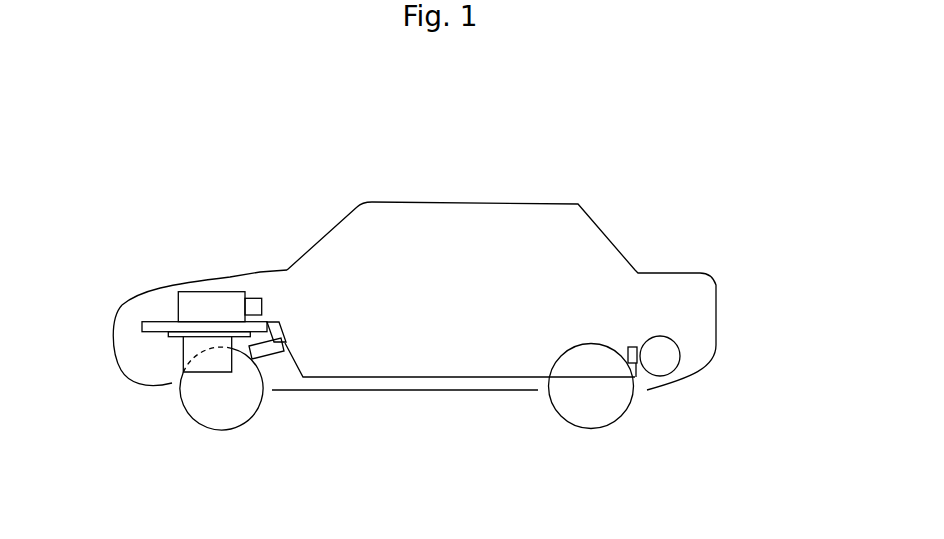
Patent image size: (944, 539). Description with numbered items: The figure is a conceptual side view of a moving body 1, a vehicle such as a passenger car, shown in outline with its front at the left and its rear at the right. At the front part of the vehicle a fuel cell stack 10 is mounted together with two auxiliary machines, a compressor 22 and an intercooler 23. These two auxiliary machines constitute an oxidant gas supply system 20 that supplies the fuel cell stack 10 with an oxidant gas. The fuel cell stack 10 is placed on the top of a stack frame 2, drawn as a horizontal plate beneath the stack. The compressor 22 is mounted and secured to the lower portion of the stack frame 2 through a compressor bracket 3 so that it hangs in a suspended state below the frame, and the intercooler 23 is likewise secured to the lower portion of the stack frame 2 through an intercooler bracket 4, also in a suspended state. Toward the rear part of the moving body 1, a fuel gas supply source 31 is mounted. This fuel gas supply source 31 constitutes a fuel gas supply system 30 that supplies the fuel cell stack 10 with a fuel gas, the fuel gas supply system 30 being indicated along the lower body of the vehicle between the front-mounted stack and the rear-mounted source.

The moving body 1 is at (431, 174).
The stack frame 2 is at (155, 327).
The compressor bracket 3 is at (212, 332).
The intercooler bracket 4 is at (268, 337).
The fuel cell stack 10 is at (222, 298).
The oxidant gas supply system 20 is at (170, 366).
The compressor 22 is at (227, 365).
The intercooler 23 is at (157, 352).
The fuel gas supply system 30 is at (460, 372).
The fuel gas supply source 31 is at (662, 345).